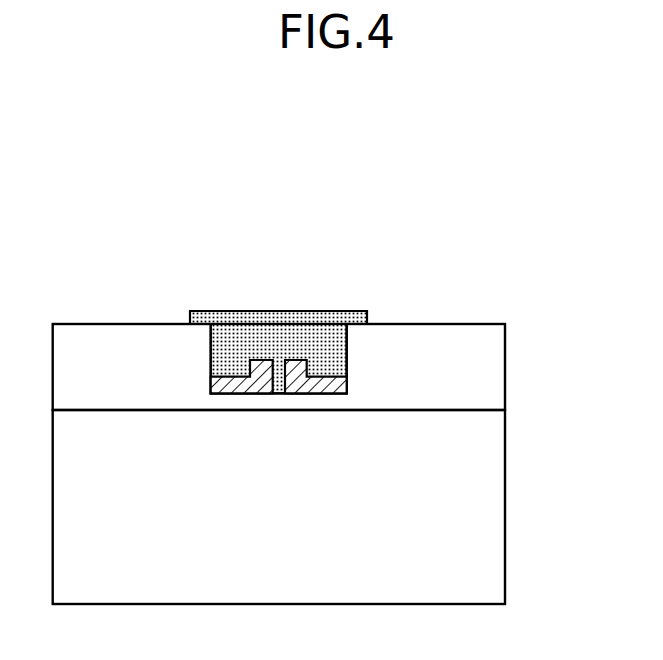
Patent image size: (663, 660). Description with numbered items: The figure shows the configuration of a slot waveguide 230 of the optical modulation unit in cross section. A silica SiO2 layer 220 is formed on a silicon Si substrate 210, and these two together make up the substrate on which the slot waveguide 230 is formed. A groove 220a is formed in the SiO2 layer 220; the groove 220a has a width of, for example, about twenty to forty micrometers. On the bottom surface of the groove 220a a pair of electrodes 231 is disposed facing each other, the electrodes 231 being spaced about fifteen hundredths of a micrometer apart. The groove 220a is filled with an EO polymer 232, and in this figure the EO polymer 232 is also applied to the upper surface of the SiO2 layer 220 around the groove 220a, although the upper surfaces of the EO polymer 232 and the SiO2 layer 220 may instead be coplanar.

The Si substrate 210 is at (505, 507).
The SiO2 layer 220 is at (505, 365).
The groove 220a is at (347, 357).
The slot waveguide 230 is at (312, 299).
The electrodes 231 is at (300, 360).
The EO polymer 232 is at (342, 310).